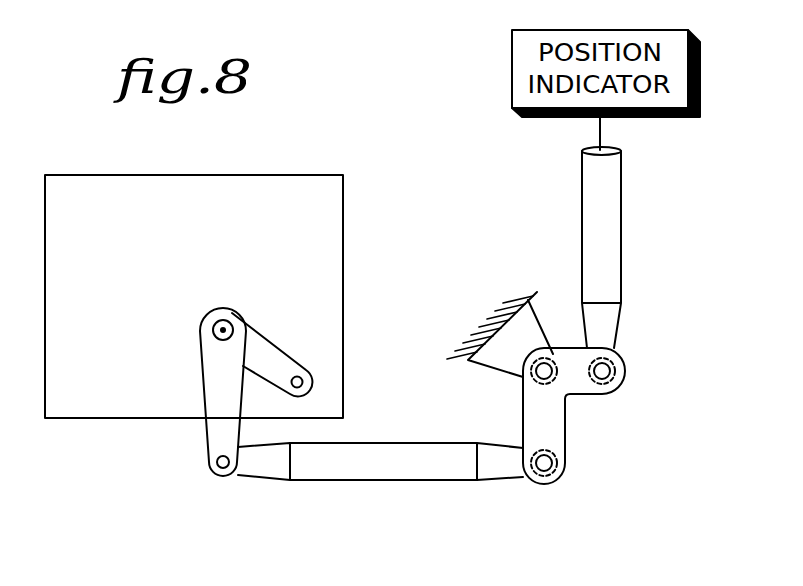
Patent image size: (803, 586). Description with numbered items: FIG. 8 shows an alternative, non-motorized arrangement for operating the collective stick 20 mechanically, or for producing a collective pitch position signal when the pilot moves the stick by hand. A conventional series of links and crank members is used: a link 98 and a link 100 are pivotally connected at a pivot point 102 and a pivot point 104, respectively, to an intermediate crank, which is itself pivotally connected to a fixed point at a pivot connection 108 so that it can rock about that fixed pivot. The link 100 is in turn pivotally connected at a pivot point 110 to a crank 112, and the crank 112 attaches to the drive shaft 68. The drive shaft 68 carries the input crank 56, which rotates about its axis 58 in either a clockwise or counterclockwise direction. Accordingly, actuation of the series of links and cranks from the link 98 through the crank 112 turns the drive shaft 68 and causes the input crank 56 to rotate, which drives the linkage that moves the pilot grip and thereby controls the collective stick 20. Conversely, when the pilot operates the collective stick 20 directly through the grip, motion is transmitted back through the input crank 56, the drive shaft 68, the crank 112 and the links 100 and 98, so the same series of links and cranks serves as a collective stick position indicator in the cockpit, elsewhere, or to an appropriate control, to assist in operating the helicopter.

The collective stick 20 is at (200, 246).
The input crank 56 is at (276, 356).
The axis 58 is at (214, 333).
The drive shaft 68 is at (228, 318).
The link 98 is at (595, 218).
The link 100 is at (387, 448).
The pivot point 102 is at (612, 375).
The pivot point 104 is at (556, 472).
The pivot connection 108 is at (523, 377).
The pivot point 110 is at (217, 472).
The crank 112 is at (220, 425).